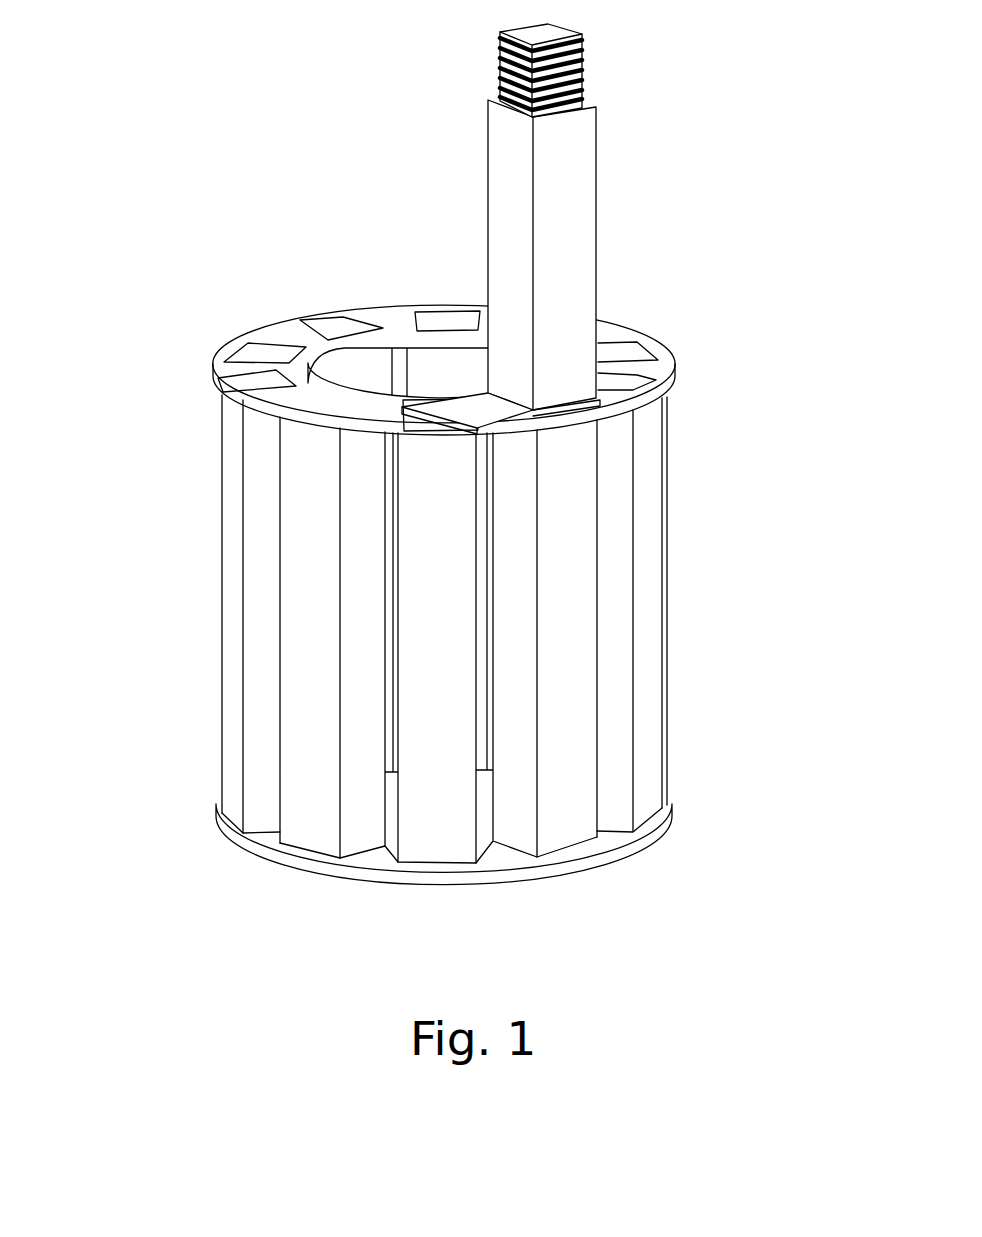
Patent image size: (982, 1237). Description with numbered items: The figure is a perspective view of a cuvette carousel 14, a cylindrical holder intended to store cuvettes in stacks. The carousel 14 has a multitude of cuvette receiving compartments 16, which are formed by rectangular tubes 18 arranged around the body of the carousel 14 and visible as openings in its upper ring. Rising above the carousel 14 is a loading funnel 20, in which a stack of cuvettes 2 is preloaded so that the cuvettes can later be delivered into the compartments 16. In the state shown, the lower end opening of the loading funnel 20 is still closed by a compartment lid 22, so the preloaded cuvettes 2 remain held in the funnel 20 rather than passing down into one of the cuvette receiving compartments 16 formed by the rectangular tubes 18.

The cuvettes 2 is at (560, 32).
The loading funnel 20 is at (518, 206).
The cuvette receiving compartments 16 is at (279, 353).
The compartment lid 22 is at (480, 413).
The cuvette carousel 14 is at (613, 606).
The rectangular tubes 18 is at (310, 813).